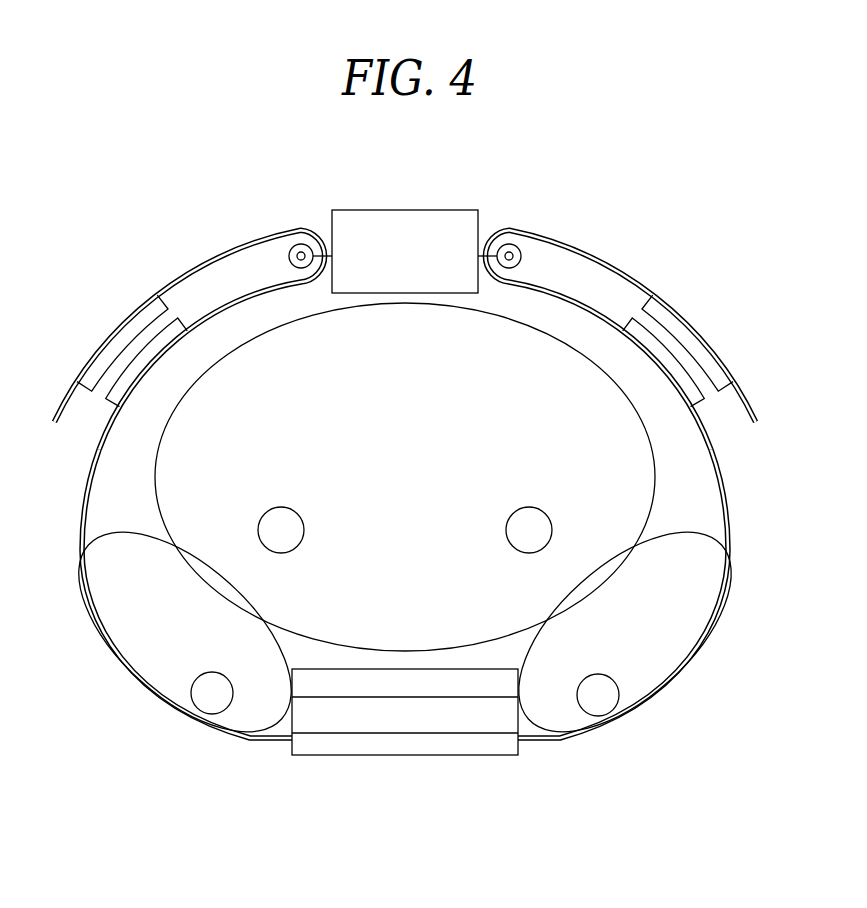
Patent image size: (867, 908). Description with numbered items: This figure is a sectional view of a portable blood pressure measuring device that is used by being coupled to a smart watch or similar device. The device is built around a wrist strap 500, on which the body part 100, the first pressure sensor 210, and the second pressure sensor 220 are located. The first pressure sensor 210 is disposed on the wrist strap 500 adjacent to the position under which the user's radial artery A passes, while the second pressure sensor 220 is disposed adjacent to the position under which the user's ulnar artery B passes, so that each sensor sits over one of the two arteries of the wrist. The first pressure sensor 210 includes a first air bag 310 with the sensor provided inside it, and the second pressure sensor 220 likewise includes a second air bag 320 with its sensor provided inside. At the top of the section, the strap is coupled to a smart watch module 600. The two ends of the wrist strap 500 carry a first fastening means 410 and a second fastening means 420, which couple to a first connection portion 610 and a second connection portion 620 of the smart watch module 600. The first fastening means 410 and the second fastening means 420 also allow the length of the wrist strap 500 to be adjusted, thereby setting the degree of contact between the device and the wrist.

The body part 100 is at (518, 745).
The first pressure sensor 210 is at (600, 698).
The second pressure sensor 220 is at (210, 698).
The first air bag 310 is at (653, 635).
The second air bag 320 is at (157, 635).
The first fastening means 410 is at (697, 350).
The second fastening means 420 is at (113, 350).
The wrist strap 500 is at (730, 535).
The smart watch module 600 is at (430, 210).
The first connection portion 610 is at (513, 247).
The second connection portion 620 is at (297, 247).
The radial artery A is at (263, 513).
The ulnar artery B is at (547, 513).